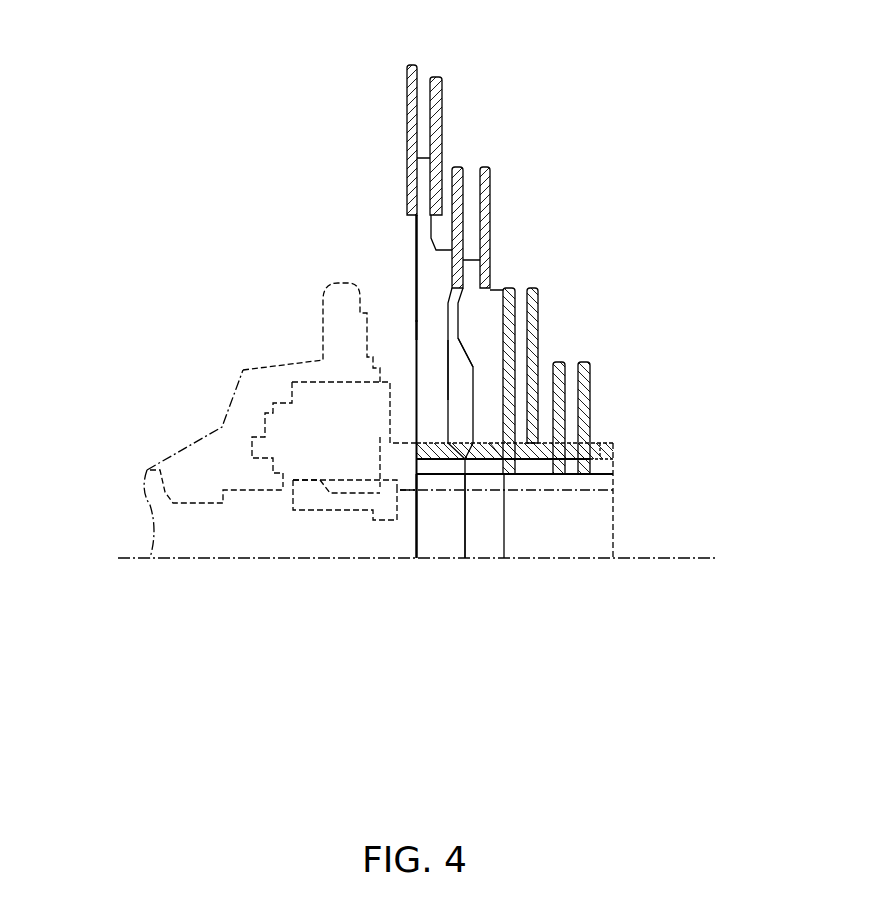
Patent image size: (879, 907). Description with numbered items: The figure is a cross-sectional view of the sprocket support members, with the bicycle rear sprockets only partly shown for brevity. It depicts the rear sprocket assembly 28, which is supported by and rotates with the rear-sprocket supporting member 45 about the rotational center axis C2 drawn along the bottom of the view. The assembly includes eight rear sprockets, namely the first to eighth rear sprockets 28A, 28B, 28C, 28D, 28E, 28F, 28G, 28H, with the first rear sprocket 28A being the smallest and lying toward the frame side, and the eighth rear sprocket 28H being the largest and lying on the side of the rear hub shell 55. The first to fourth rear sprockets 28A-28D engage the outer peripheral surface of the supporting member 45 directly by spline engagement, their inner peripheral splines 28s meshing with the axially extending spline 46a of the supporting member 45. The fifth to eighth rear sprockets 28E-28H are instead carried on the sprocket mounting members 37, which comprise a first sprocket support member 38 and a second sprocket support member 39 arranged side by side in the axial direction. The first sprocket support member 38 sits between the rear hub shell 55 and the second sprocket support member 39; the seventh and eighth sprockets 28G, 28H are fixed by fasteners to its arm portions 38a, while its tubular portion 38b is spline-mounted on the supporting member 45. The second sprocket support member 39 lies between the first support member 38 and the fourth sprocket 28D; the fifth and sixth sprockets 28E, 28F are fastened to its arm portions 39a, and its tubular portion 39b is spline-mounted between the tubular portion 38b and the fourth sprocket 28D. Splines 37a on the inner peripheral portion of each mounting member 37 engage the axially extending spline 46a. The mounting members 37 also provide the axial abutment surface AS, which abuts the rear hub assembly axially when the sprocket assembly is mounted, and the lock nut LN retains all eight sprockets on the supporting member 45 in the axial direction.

The rear sprocket assembly 28 is at (616, 112).
The first rear sprocket 28A is at (590, 383).
The second rear sprocket 28B is at (566, 362).
The third rear sprocket 28C is at (540, 292).
The fourth rear sprocket 28D is at (515, 290).
The fifth rear sprocket 28E is at (490, 200).
The sixth rear sprocket 28F is at (455, 170).
The seventh rear sprocket 28G is at (442, 127).
The eighth rear sprocket 28H is at (407, 113).
The splines 28s is at (592, 468).
The sprocket mounting members 37 is at (222, 260).
The splines 37a is at (414, 470).
The first sprocket support member 38 is at (414, 322).
The arm portions 38a is at (427, 262).
The tubular portion 38b is at (440, 450).
The second sprocket support member 39 is at (472, 387).
The arm portions 39a is at (445, 320).
The tubular portion 39b is at (478, 447).
The rear-sprocket supporting member 45 is at (336, 520).
The axially extending spline 46a is at (498, 460).
The rear hub shell 55 is at (243, 368).
The axial abutment surface AS is at (410, 448).
The lock nut LN is at (600, 450).
The rotational center axis C2 is at (419, 558).